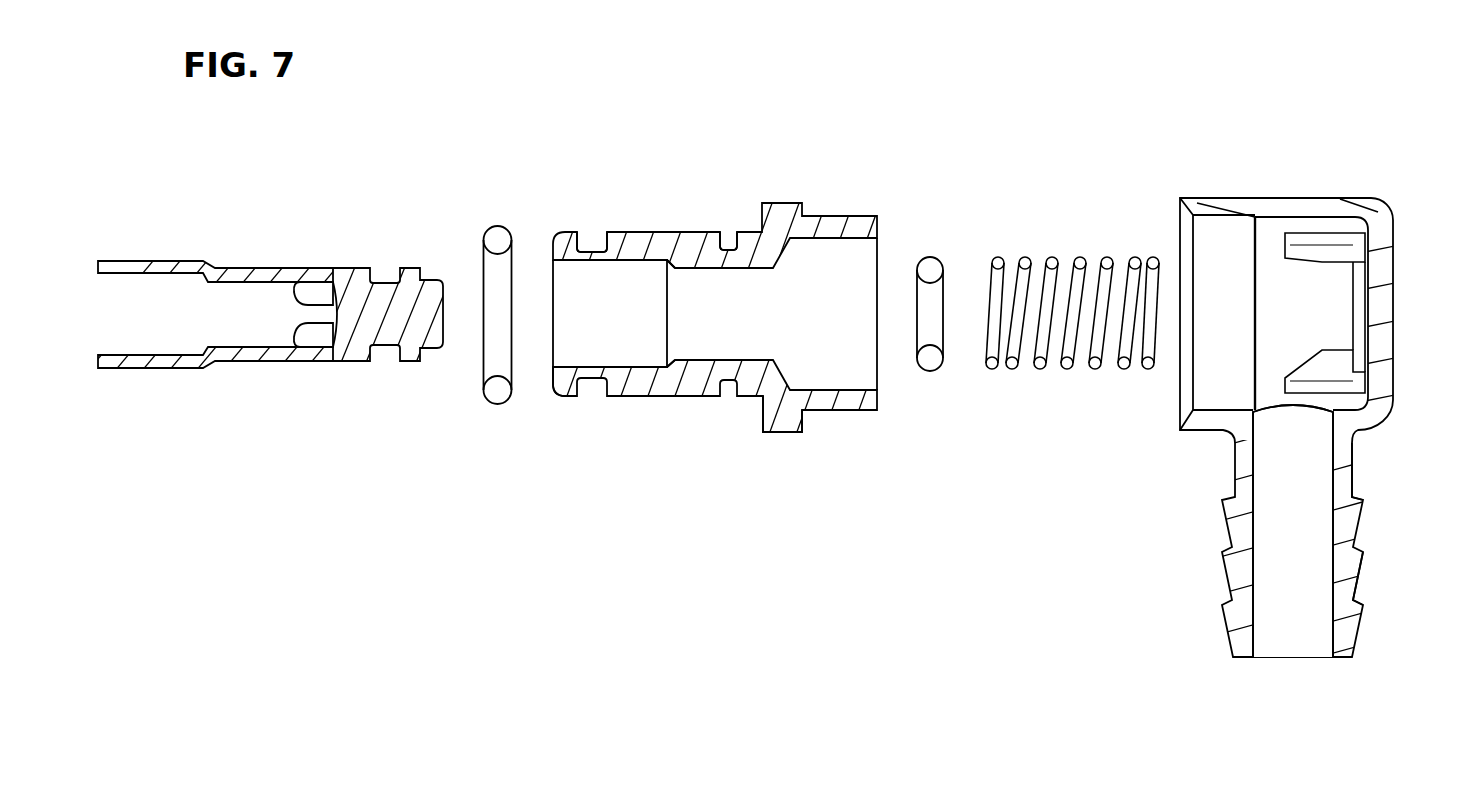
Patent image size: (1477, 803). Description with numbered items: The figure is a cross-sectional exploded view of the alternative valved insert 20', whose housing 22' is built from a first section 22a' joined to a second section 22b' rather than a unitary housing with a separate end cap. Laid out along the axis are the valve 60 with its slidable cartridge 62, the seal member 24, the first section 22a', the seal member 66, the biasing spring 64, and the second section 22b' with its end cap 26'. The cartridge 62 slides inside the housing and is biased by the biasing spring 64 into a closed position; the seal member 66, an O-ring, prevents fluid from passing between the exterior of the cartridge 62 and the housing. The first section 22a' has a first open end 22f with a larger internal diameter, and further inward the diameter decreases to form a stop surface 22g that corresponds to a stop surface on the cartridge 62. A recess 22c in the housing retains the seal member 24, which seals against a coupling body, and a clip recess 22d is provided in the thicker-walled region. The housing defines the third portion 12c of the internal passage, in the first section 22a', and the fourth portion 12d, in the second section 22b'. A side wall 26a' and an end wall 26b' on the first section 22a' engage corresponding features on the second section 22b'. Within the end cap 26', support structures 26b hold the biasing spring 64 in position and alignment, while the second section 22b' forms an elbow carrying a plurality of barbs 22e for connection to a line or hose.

The valve 60 is at (160, 238).
The cartridge 62 is at (322, 272).
The valved insert 20' is at (474, 86).
The seal member 24 is at (492, 240).
The housing 22' is at (703, 241).
The first section 22a' is at (663, 186).
The recess 22c is at (592, 248).
The clip recess 22d is at (727, 247).
The first open end 22f is at (552, 368).
The stop surface 22g is at (669, 365).
The end wall 26b' is at (821, 451).
The side wall 26a' is at (875, 451).
The third portion of the internal passage 12c is at (622, 335).
The seal member 66 is at (930, 270).
The biasing spring 64 is at (1080, 262).
The end cap 26' is at (1287, 394).
The support structures 26b is at (1308, 257).
The fourth portion of the internal passage 12d is at (1318, 594).
The barbs 22e is at (1358, 498).
The second section 22b' is at (1396, 565).